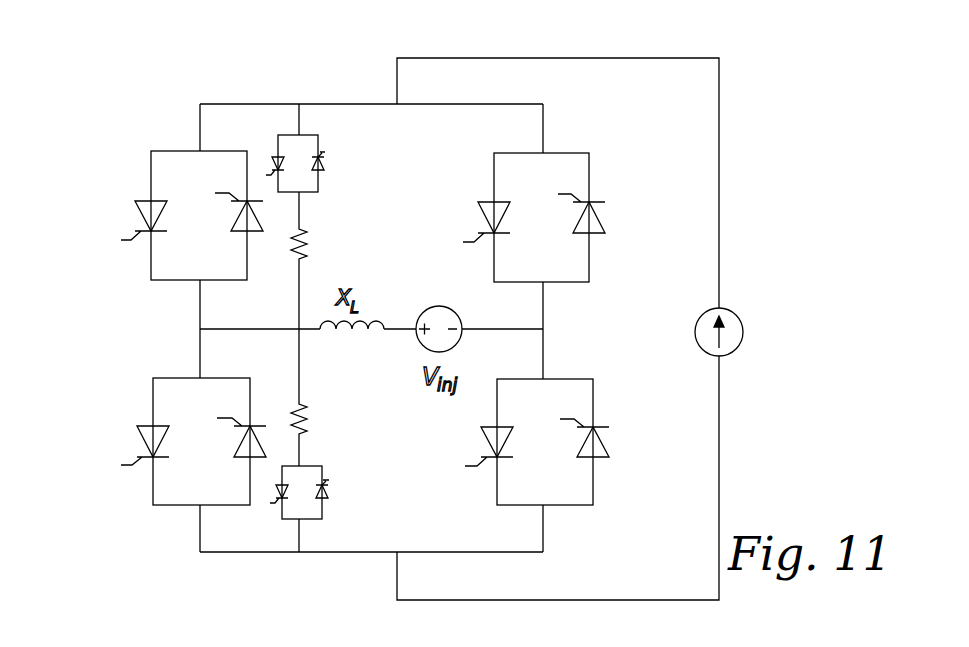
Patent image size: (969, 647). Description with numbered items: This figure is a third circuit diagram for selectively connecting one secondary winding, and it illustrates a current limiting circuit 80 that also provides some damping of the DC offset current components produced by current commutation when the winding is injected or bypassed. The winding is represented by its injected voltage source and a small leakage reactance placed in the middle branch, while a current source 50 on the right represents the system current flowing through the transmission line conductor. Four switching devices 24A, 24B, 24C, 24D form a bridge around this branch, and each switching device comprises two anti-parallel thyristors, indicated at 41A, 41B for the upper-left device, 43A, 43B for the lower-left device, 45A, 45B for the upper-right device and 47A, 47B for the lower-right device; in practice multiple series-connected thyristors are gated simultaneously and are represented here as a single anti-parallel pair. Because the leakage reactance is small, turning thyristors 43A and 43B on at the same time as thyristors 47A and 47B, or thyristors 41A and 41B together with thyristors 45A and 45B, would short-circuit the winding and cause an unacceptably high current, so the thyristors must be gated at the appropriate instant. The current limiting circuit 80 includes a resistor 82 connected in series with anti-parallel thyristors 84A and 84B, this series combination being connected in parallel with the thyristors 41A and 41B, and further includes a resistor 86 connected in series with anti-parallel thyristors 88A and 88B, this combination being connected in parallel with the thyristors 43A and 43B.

The current limiting circuit 80 is at (337, 72).
The current source 50 is at (728, 311).
The switching device 24A is at (147, 162).
The switching device 24B is at (150, 383).
The switching device 24C is at (604, 163).
The switching device 24D is at (605, 385).
The thyristor 41A is at (146, 200).
The thyristor 41B is at (241, 234).
The thyristor 43A is at (148, 425).
The thyristor 43B is at (244, 460).
The thyristor 45A is at (490, 200).
The thyristor 45B is at (597, 235).
The thyristor 47A is at (488, 428).
The thyristor 47B is at (600, 459).
The thyristor 84A is at (278, 155).
The thyristor 84B is at (321, 172).
The resistor 82 is at (306, 238).
The resistor 86 is at (303, 406).
The thyristor 88A is at (277, 483).
The thyristor 88B is at (326, 499).